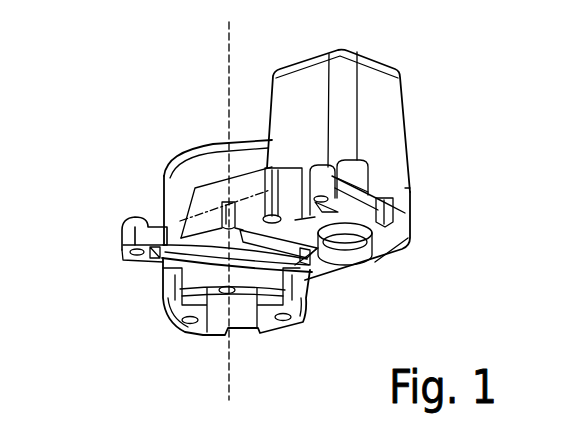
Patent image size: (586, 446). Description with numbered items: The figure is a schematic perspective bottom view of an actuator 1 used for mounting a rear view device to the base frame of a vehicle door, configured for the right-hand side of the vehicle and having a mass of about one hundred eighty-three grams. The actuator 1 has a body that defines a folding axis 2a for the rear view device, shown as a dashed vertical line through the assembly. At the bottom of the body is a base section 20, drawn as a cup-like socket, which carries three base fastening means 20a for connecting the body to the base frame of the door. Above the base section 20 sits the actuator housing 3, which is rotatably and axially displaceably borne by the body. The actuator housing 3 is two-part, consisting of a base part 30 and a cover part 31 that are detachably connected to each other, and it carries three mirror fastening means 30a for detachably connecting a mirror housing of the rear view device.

The actuator 1 is at (148, 115).
The folding axis 2a is at (227, 62).
The actuator housing 3 is at (420, 188).
The base section 20 is at (322, 298).
The base fastening means 20a is at (220, 310).
The base part 30 is at (412, 223).
The mirror fastening means 30a is at (132, 216).
The cover part 31 is at (388, 90).